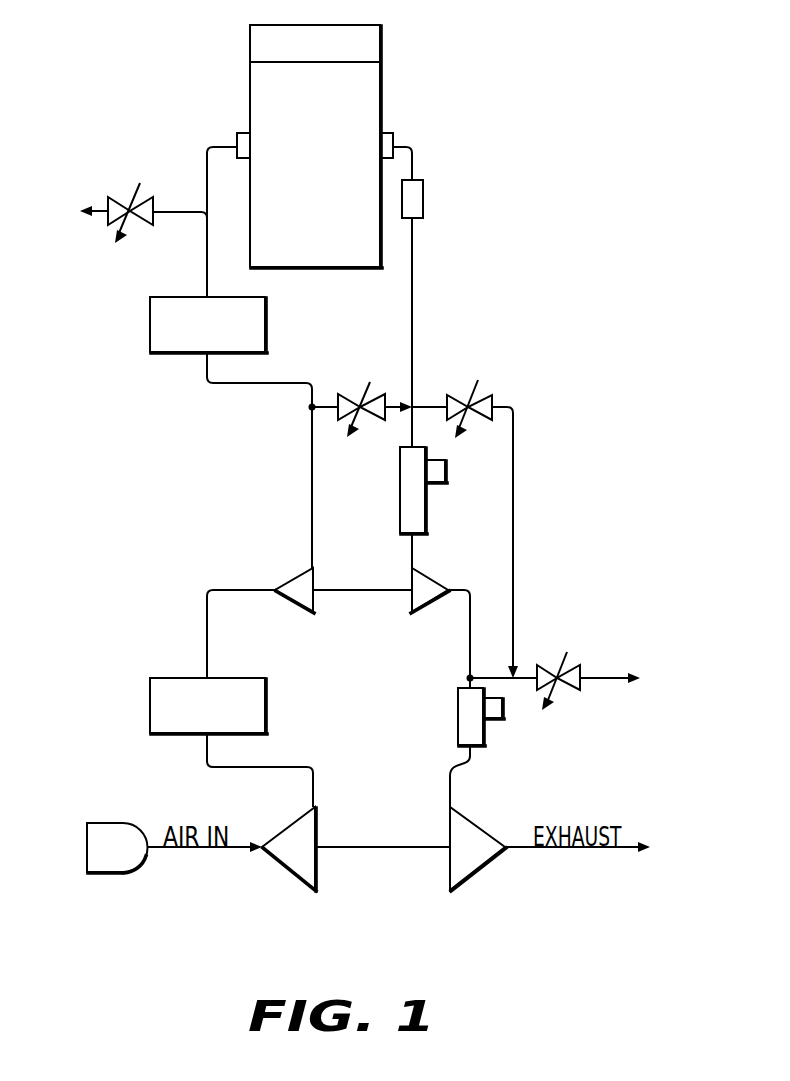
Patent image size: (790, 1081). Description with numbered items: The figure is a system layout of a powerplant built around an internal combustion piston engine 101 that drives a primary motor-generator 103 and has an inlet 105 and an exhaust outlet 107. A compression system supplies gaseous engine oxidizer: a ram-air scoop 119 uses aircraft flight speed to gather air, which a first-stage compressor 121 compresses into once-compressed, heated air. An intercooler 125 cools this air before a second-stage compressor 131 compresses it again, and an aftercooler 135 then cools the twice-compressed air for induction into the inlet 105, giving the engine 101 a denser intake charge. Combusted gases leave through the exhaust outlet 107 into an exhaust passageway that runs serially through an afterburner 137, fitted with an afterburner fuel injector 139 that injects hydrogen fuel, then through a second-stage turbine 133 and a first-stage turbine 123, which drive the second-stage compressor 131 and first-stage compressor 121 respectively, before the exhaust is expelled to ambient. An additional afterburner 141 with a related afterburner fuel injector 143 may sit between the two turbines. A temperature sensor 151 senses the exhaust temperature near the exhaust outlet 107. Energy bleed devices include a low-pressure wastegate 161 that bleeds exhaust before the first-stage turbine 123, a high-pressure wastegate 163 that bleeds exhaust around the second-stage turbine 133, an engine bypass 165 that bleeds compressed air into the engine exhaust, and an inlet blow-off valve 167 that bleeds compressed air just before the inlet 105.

The internal combustion piston engine 101 is at (331, 171).
The primary motor-generator 103 is at (331, 57).
The inlet 105 is at (241, 133).
The exhaust outlet 107 is at (390, 133).
The ram-air scoop 119 is at (127, 860).
The first-stage compressor 121 is at (311, 860).
The first-stage turbine 123 is at (484, 860).
The intercooler 125 is at (223, 719).
The second-stage compressor 131 is at (300, 578).
The second-stage turbine 133 is at (432, 578).
The aftercooler 135 is at (223, 338).
The afterburner 137 is at (425, 532).
The afterburner fuel injector 139 is at (445, 470).
The afterburner 141 is at (475, 730).
The afterburner fuel injector 143 is at (505, 706).
The temperature sensor 151 is at (423, 200).
The low-pressure wastegate 161 is at (559, 677).
The high-pressure wastegate 163 is at (470, 406).
The engine bypass 165 is at (362, 406).
The inlet blow-off valve 167 is at (127, 197).